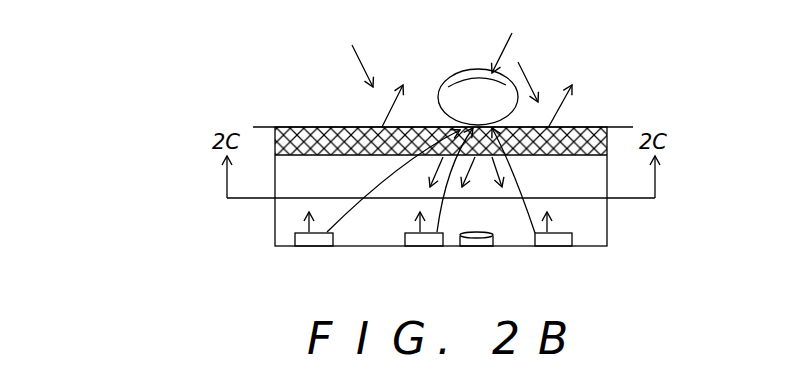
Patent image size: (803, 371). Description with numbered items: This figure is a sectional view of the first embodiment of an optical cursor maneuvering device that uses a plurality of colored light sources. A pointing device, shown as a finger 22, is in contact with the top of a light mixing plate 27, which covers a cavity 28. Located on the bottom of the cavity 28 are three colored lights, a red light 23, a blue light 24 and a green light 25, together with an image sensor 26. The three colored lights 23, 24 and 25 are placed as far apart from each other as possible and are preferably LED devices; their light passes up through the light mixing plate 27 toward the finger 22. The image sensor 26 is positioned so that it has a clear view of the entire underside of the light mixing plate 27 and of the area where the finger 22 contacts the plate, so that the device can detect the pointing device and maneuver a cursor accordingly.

The finger 22 is at (470, 81).
The red light 23 is at (410, 250).
The blue light 24 is at (300, 250).
The green light 25 is at (565, 248).
The image sensor 26 is at (487, 249).
The light mixing plate 27 is at (607, 140).
The cavity 28 is at (607, 228).